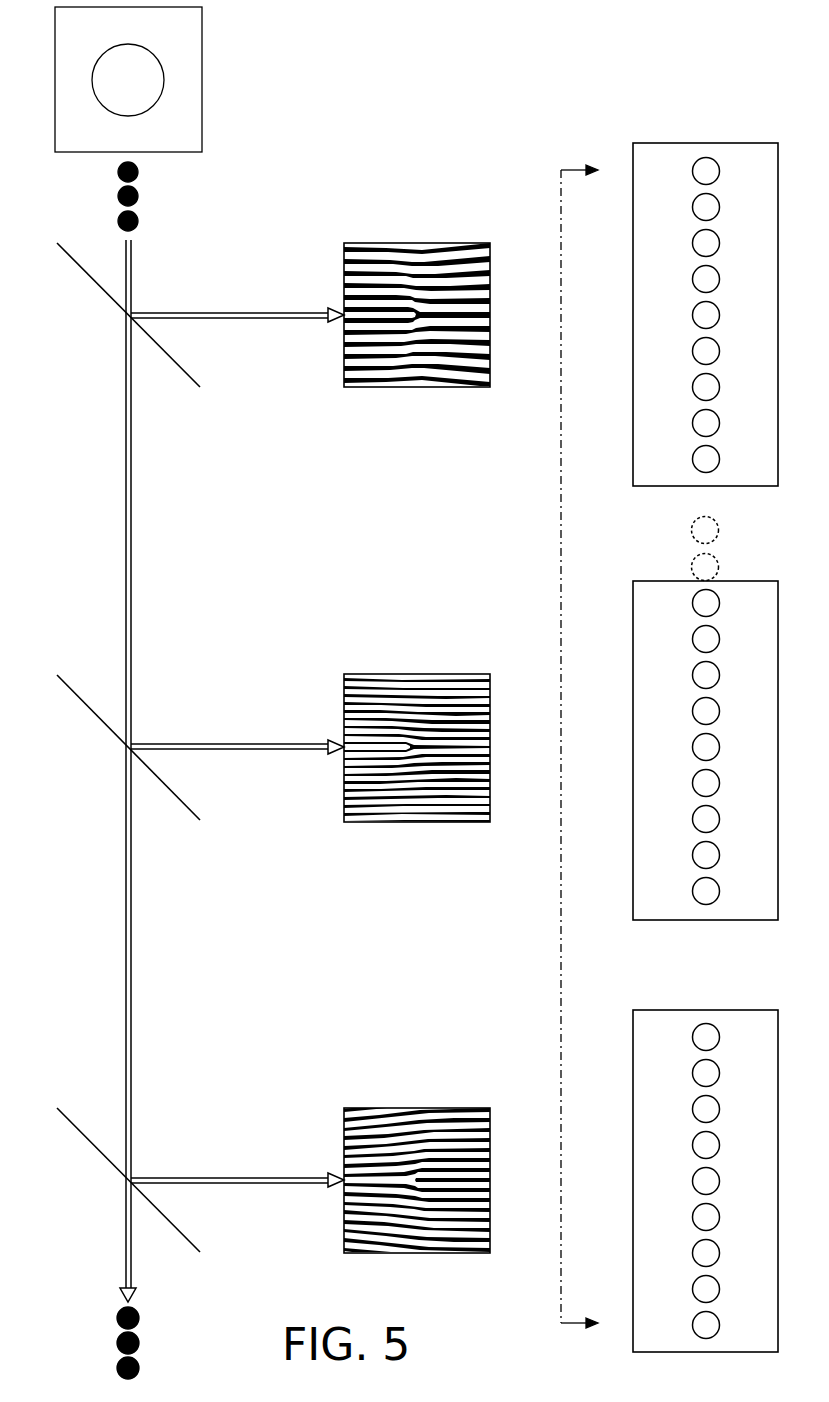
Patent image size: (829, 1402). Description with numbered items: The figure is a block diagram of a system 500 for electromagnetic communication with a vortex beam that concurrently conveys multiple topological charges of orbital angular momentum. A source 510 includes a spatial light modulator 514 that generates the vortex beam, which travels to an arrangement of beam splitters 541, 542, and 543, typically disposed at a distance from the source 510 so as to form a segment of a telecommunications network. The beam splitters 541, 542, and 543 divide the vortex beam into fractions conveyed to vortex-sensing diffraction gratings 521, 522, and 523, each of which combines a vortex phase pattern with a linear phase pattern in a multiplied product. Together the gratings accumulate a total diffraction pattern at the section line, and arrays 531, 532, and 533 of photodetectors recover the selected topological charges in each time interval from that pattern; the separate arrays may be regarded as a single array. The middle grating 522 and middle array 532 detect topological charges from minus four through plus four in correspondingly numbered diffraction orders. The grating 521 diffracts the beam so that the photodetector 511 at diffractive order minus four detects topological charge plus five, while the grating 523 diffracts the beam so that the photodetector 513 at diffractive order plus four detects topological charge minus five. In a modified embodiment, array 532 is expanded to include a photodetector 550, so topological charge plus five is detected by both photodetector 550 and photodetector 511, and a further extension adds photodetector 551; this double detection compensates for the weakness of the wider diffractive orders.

The system 500 is at (763, 46).
The source 510 is at (55, 43).
The spatial light modulator 514 is at (147, 90).
The photodetector 511 is at (692, 462).
The photodetector 513 is at (690, 1034).
The vortex-sensing diffraction grating 521 is at (344, 280).
The vortex-sensing diffraction grating 522 is at (344, 715).
The vortex-sensing diffraction grating 523 is at (344, 1147).
The array of photodetectors 531 is at (703, 296).
The array of photodetectors 532 is at (652, 581).
The array of photodetectors 533 is at (703, 1162).
The beam splitter 541 is at (66, 253).
The beam splitter 542 is at (66, 685).
The beam splitter 543 is at (66, 1119).
The photodetector 550 is at (719, 568).
The photodetector 551 is at (719, 530).